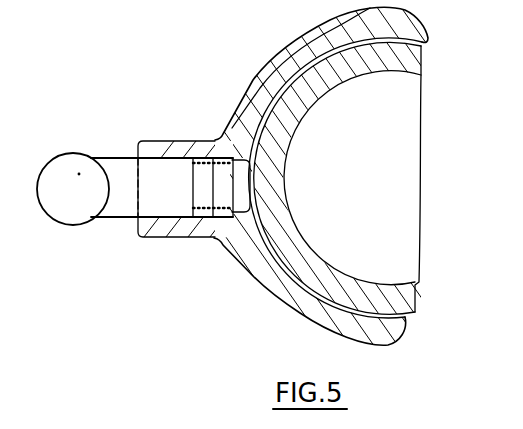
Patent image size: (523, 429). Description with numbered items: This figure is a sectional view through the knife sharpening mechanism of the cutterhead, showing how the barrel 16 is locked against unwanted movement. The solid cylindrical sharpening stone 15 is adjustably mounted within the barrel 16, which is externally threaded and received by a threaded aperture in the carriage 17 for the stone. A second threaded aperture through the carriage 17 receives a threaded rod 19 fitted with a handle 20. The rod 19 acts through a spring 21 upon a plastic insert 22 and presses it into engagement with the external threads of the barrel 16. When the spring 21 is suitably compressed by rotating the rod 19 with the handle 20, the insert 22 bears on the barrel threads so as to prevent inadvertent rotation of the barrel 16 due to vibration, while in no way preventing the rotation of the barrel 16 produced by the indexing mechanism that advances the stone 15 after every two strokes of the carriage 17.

The sharpening stone 15 is at (412, 143).
The barrel 16 is at (428, 37).
The carriage 17 is at (268, 282).
The threaded rod 19 is at (123, 222).
The handle 20 is at (53, 222).
The spring 21 is at (208, 221).
The plastic insert 22 is at (238, 180).